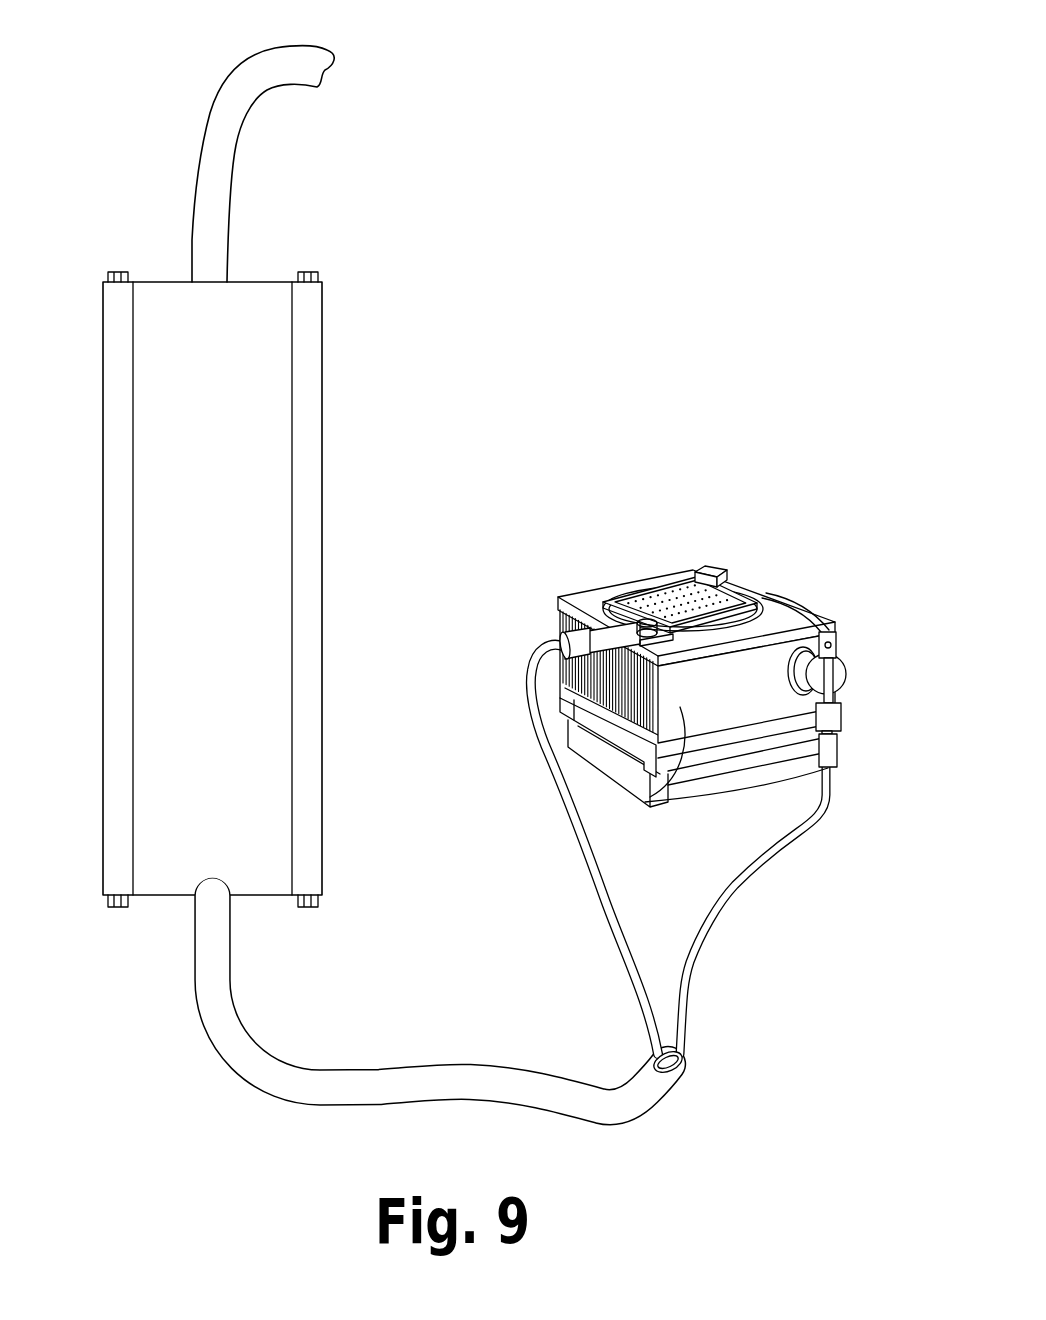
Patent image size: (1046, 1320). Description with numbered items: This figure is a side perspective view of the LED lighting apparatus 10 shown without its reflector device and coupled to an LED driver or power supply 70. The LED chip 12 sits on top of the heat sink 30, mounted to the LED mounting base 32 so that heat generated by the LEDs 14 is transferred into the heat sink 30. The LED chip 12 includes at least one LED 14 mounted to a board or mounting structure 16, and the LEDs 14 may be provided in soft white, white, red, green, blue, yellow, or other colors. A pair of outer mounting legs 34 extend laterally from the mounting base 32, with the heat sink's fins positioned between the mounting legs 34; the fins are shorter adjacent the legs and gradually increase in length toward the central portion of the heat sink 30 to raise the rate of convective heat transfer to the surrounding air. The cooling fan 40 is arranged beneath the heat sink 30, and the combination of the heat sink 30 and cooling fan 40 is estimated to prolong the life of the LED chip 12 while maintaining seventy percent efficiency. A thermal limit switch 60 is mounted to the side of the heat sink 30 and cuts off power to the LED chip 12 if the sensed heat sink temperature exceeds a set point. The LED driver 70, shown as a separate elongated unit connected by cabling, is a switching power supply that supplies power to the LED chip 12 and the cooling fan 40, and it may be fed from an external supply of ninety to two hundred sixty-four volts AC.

The LED lighting apparatus 10 is at (740, 601).
The LED chip 12 is at (750, 580).
The LED 14 is at (665, 600).
The board or mounting structure 16 is at (648, 590).
The heat sink 30 is at (841, 665).
The LED mounting base 32 is at (824, 630).
The outer mounting legs 34 is at (655, 796).
The cooling fan 40 is at (712, 818).
The thermal limit switch 60 is at (860, 671).
The LED driver or power supply 70 is at (365, 400).